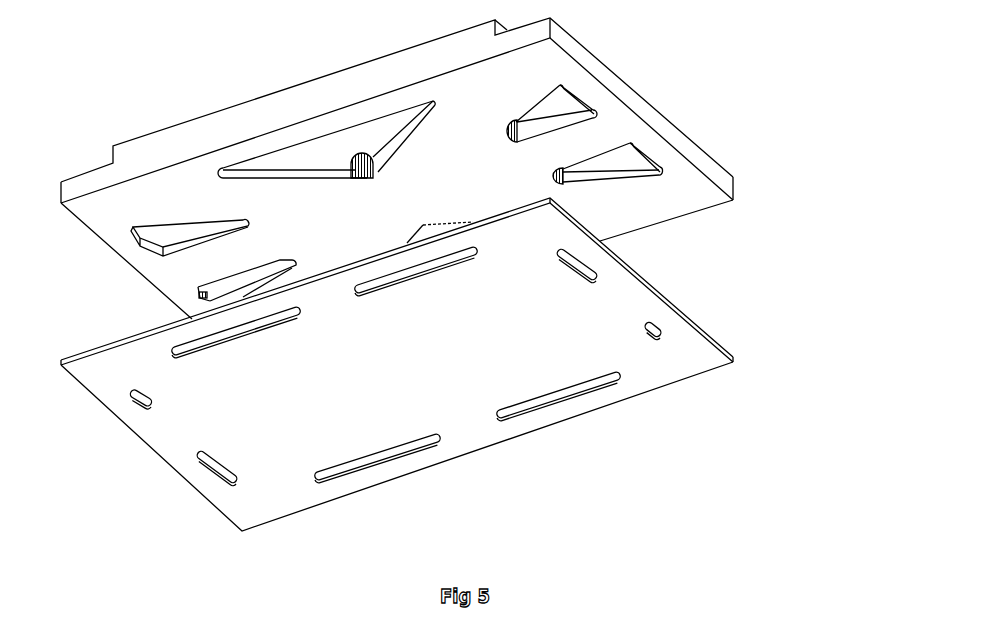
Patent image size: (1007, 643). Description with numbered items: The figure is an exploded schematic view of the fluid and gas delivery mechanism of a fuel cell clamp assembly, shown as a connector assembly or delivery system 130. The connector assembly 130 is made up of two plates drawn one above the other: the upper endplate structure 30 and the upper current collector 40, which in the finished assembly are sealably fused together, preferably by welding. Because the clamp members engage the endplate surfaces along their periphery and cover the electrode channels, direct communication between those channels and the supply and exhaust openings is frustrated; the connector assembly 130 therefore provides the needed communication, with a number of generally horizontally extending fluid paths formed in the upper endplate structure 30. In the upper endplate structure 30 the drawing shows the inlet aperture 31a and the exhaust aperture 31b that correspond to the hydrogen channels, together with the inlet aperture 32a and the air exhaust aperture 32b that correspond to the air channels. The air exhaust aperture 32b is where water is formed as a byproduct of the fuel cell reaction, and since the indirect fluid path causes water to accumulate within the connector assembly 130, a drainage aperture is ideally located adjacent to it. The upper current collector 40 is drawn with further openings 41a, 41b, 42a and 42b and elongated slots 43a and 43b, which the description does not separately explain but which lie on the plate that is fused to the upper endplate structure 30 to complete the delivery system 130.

The upper endplate structure 30 is at (653, 107).
The inlet aperture 31a is at (633, 160).
The exhaust aperture 31b is at (130, 233).
The inlet aperture 32a is at (335, 140).
The air exhaust aperture 32b is at (178, 313).
The upper current collector 40 is at (633, 360).
The short slot 41a is at (661, 327).
The short slot 41b is at (128, 396).
The oblong slot 42a is at (612, 274).
The oblong slot 42b is at (197, 455).
The elongated slots 43a is at (360, 293).
The elongated slots 43b is at (497, 415).
The connector assembly 130 is at (458, 274).